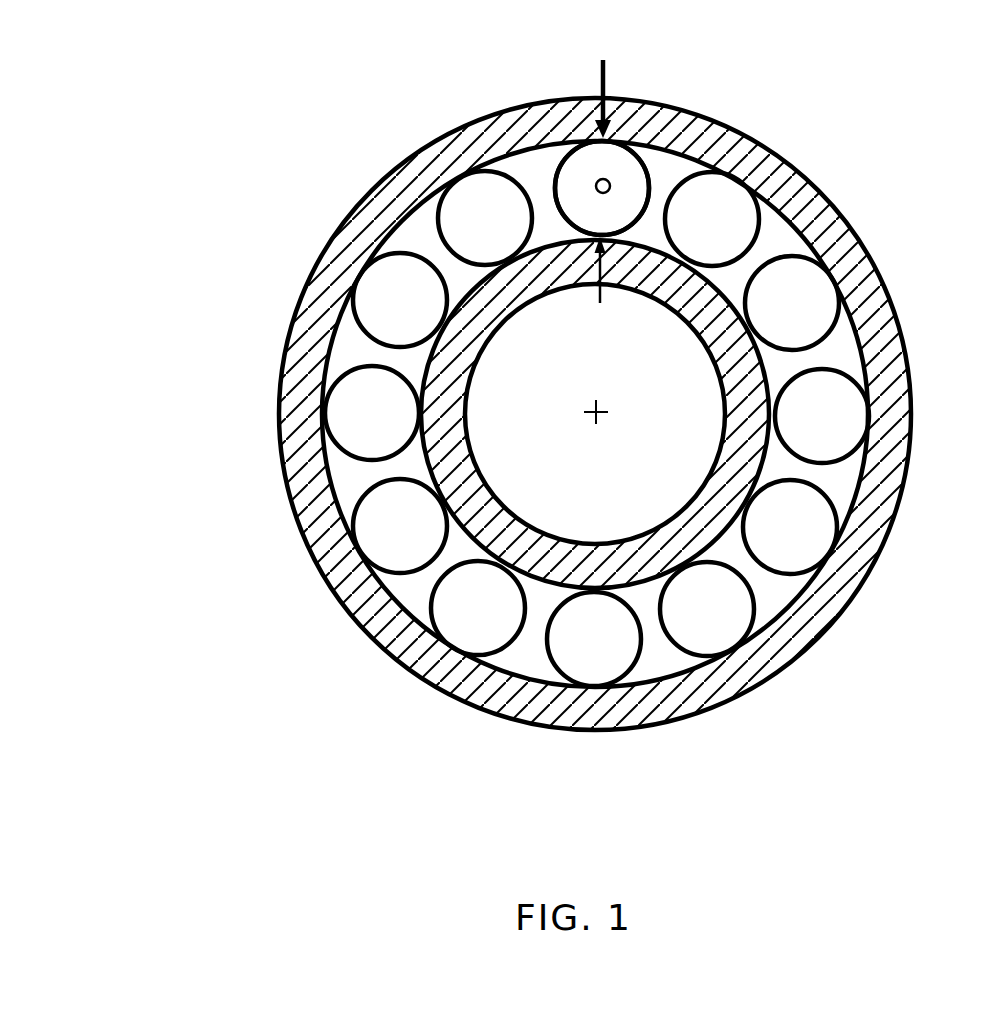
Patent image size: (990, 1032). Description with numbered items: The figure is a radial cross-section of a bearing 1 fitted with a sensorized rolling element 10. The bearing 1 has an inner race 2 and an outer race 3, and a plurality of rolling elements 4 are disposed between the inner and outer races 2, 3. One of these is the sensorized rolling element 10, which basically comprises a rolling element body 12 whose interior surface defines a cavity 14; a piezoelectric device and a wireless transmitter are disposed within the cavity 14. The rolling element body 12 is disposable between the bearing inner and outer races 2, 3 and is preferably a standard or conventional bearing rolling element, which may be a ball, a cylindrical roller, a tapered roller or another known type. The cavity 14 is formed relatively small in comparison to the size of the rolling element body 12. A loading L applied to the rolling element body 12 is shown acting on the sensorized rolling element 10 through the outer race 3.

The bearing 1 is at (193, 278).
The inner race 2 is at (648, 601).
The outer race 3 is at (386, 680).
The rolling elements 4 is at (473, 195).
The sensorized rolling element 10 is at (666, 149).
The rolling element body 12 is at (575, 163).
The cavity 14 is at (605, 180).
The loading L is at (601, 159).